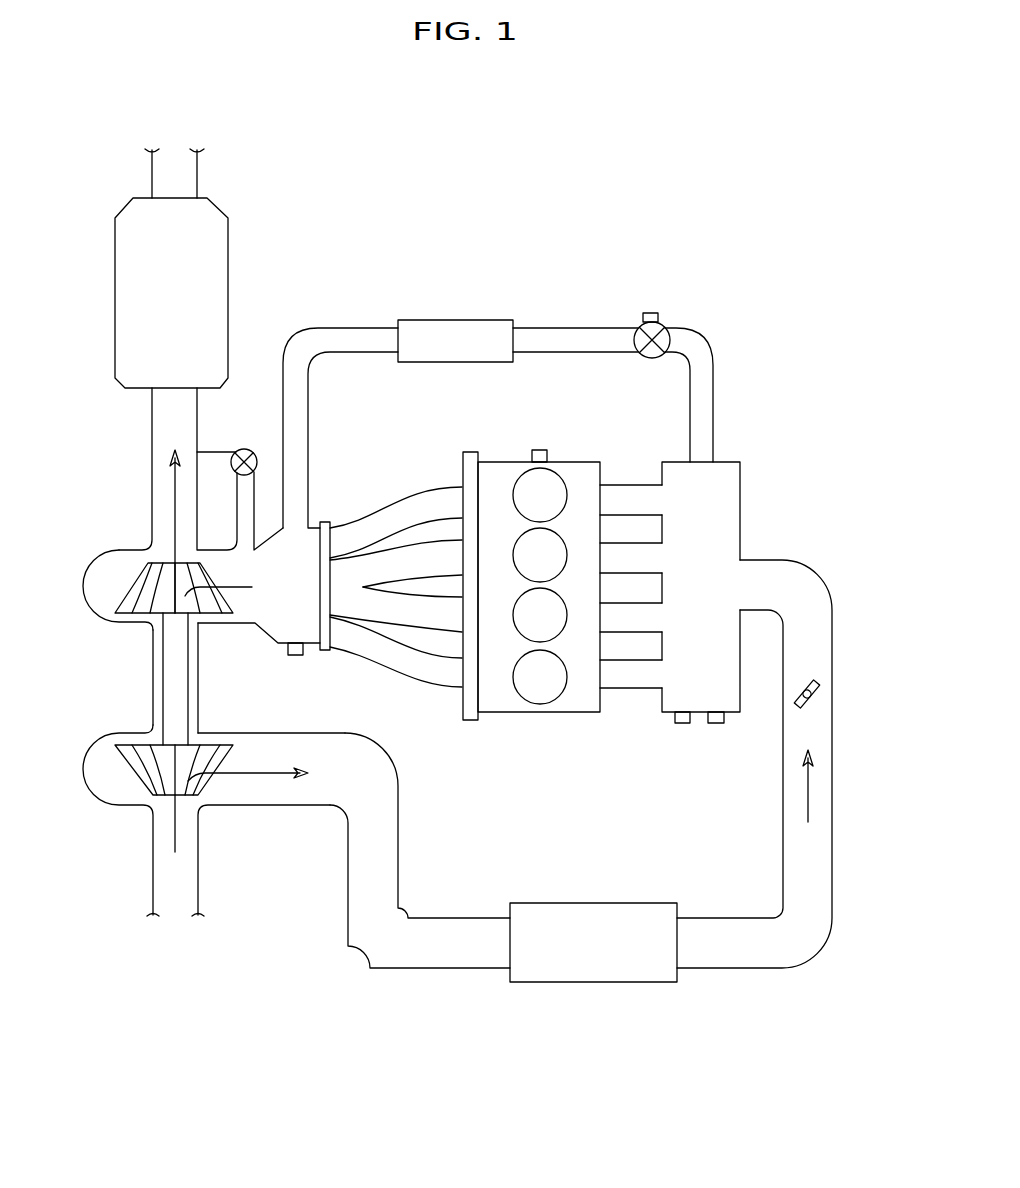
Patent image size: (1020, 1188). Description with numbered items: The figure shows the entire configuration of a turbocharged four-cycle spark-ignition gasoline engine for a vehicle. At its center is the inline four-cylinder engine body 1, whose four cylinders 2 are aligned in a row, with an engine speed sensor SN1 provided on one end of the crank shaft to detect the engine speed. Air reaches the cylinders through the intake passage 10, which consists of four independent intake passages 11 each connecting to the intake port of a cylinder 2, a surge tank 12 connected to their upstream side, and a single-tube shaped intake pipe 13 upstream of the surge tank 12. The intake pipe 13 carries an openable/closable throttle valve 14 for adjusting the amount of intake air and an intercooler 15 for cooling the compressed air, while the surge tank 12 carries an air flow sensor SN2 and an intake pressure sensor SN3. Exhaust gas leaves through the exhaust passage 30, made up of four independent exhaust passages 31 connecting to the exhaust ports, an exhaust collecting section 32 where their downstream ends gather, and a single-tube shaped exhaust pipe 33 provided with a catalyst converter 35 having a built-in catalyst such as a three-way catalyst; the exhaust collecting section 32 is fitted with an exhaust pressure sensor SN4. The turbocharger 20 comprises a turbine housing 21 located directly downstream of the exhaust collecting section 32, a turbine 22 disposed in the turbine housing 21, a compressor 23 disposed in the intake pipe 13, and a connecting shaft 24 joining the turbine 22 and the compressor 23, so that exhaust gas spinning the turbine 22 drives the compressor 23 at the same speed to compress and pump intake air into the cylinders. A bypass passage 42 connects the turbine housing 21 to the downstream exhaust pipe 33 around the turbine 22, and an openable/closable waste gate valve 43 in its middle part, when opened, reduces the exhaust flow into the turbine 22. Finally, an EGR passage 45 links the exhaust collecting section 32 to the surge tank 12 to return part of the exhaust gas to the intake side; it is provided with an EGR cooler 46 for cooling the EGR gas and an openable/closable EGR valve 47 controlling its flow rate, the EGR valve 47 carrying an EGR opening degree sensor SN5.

The engine body 1 is at (538, 732).
The cylinder 2 is at (549, 509).
The intake passage 10 is at (830, 553).
The independent intake passage 11 is at (617, 500).
The surge tank 12 is at (740, 494).
The intake pipe 13 is at (390, 842).
The throttle valve 14 is at (818, 692).
The intercooler 15 is at (593, 973).
The turbocharger 20 is at (125, 665).
The turbine housing 21 is at (87, 560).
The turbine 22 is at (140, 585).
The compressor 23 is at (137, 770).
The connecting shaft 24 is at (177, 693).
The exhaust passage 30 is at (395, 464).
The independent exhaust passage 31 is at (422, 557).
The exhaust collecting section 32 is at (280, 617).
The exhaust pipe 33 is at (152, 433).
The catalyst converter 35 is at (215, 272).
The bypass passage 42 is at (255, 493).
The waste gate valve 43 is at (235, 452).
The EGR passage 45 is at (563, 320).
The EGR cooler 46 is at (457, 320).
The EGR valve 47 is at (652, 358).
The engine speed sensor SN1 is at (537, 450).
The air flow sensor SN2 is at (720, 724).
The intake pressure sensor SN3 is at (682, 724).
The exhaust pressure sensor SN4 is at (296, 656).
The EGR opening degree sensor SN5 is at (652, 312).